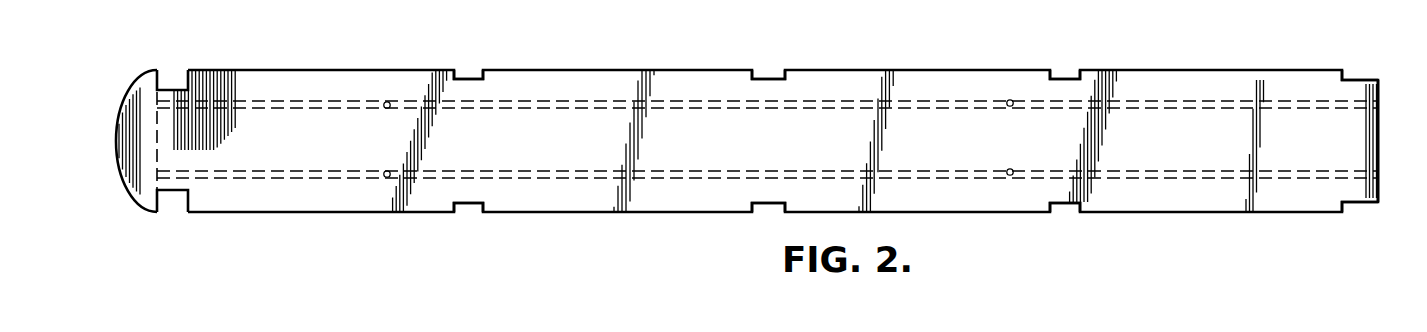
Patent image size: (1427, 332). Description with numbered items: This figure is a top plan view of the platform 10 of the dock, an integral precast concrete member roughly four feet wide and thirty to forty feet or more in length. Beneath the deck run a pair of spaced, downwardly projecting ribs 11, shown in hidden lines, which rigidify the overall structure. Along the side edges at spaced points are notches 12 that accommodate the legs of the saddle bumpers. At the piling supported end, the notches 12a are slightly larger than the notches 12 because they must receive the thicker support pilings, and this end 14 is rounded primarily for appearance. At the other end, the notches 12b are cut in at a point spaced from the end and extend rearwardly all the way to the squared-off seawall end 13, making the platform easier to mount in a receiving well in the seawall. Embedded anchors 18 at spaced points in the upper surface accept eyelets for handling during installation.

The platform 10 is at (948, 145).
The ribs 11 is at (684, 110).
The notches 12 is at (466, 77).
The notches 12a is at (174, 89).
The notches 12b is at (1356, 79).
The seawall end 13 is at (1379, 130).
The opposite end 14 is at (118, 150).
The embedded anchors 18 is at (386, 171).